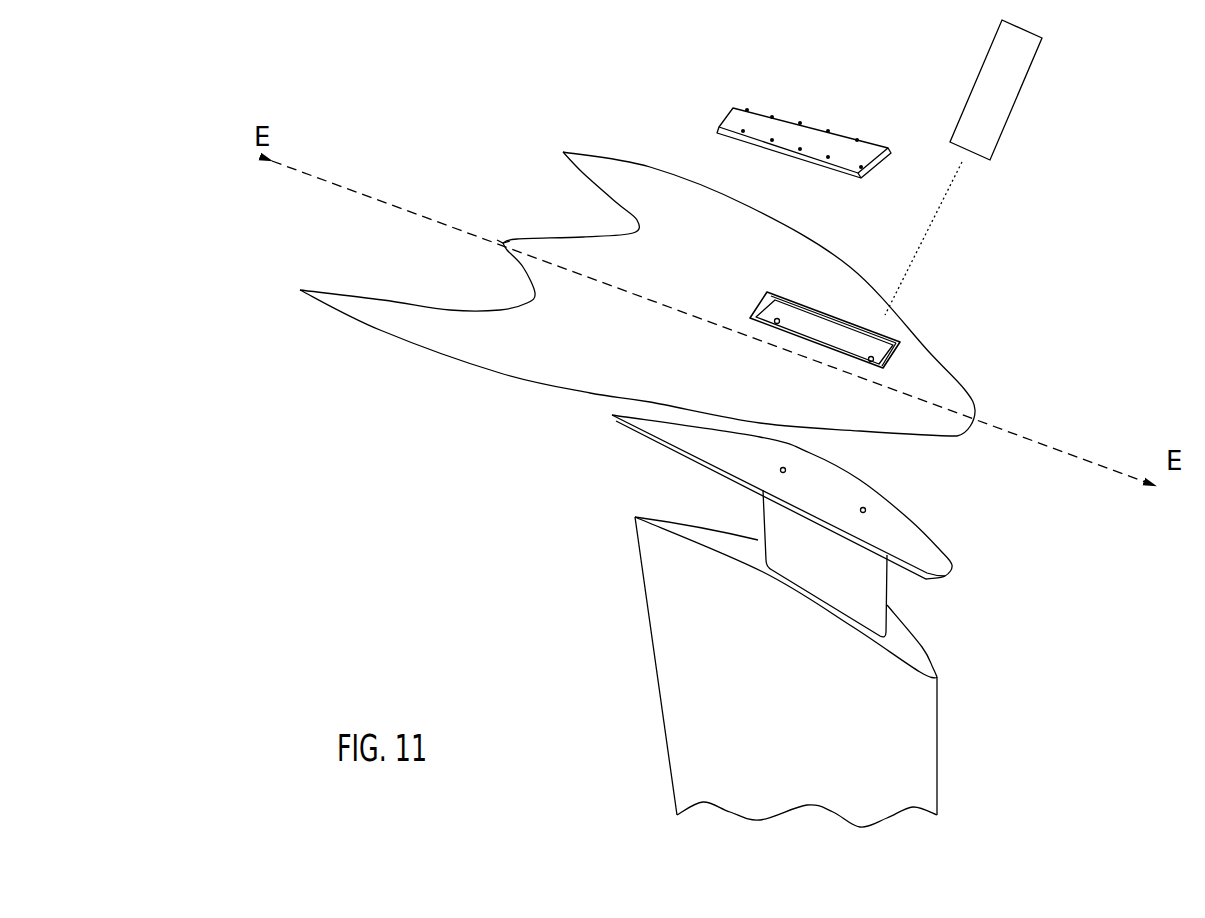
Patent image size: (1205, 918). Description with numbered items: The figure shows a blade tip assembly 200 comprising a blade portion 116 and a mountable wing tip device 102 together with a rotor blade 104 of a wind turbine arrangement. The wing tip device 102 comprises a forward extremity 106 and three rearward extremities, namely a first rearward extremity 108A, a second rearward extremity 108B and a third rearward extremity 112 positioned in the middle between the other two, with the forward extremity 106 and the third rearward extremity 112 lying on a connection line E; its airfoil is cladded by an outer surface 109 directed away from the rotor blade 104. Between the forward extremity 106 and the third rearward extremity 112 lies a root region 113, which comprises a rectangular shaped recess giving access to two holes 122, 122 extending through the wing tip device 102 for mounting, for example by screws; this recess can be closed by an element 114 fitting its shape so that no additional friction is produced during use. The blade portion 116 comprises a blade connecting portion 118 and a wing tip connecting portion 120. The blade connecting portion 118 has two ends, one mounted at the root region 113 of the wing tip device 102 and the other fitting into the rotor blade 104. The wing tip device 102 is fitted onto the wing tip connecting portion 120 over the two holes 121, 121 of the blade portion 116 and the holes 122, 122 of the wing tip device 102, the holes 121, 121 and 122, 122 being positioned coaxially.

The mountable wing tip device 102 is at (414, 399).
The rotor blade 104 is at (913, 758).
The forward extremity 106 is at (973, 398).
The first rearward extremity 108A is at (318, 300).
The second rearward extremity 108B is at (583, 157).
The outer surface 109 is at (562, 364).
The third rearward extremity 112 is at (517, 237).
The root region 113 is at (836, 328).
The closing element 114 is at (817, 142).
The blade portion 116 is at (634, 474).
The blade connecting portion 118 is at (882, 600).
The wing tip connecting portion 120 is at (933, 540).
The holes of blade portion 121 is at (788, 466).
The holes of wing tip device 122 is at (780, 314).
The blade tip assembly 200 is at (1092, 341).